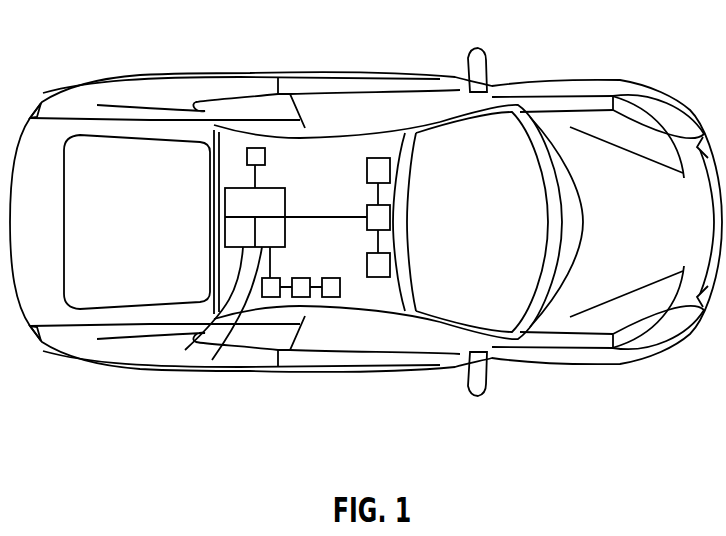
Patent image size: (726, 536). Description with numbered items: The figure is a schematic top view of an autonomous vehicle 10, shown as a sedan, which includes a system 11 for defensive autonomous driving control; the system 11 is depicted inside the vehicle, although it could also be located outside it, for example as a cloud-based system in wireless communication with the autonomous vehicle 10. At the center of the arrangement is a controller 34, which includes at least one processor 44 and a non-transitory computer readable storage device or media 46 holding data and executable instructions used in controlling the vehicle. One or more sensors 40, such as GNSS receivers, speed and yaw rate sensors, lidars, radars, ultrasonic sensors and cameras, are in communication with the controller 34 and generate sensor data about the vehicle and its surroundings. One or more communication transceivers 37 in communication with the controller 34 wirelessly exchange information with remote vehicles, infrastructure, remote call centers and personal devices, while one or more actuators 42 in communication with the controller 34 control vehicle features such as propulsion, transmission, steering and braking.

The autonomous vehicle 10 is at (581, 86).
The system for defensive autonomous driving control 11 is at (322, 158).
The controller 34 is at (237, 188).
The communication transceivers 37 is at (255, 148).
The sensors 40 is at (390, 171).
The actuators 42 is at (270, 297).
The processor 44 is at (185, 350).
The non-transitory computer readable storage device or media 46 is at (212, 360).